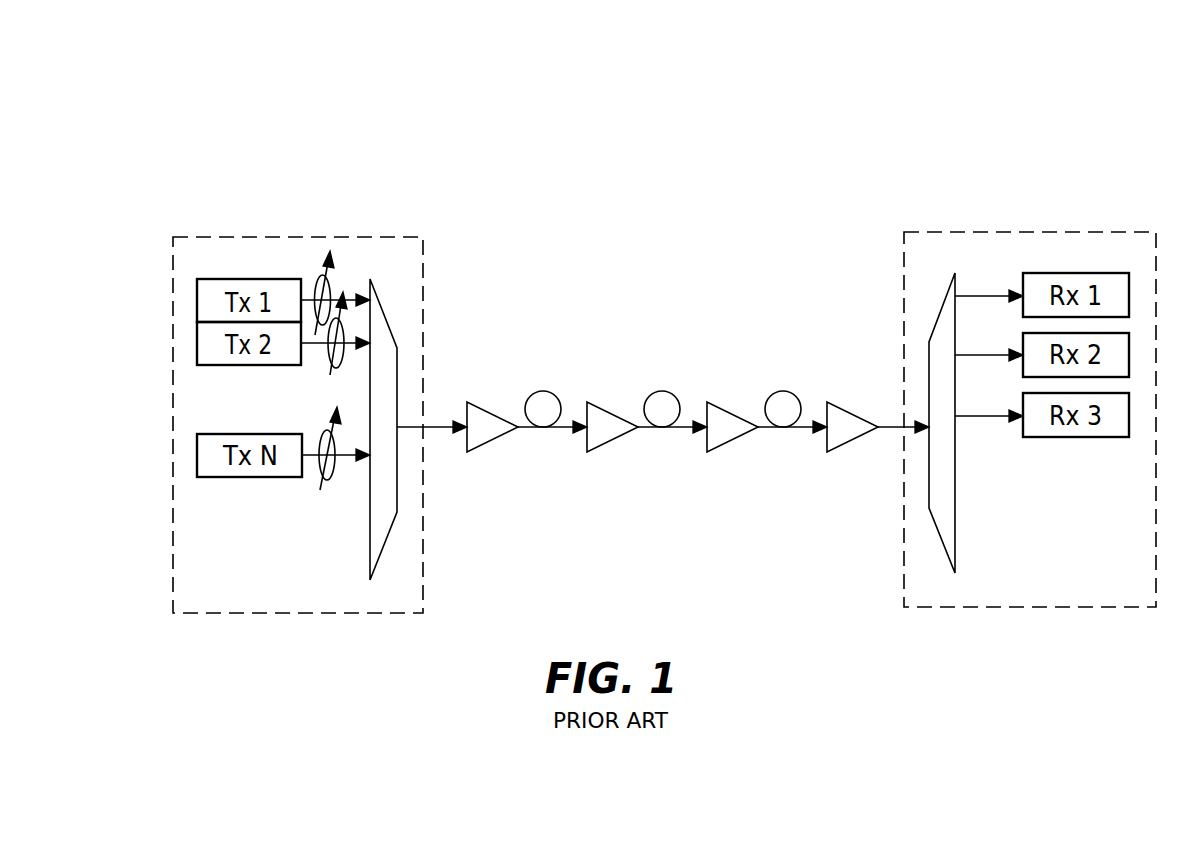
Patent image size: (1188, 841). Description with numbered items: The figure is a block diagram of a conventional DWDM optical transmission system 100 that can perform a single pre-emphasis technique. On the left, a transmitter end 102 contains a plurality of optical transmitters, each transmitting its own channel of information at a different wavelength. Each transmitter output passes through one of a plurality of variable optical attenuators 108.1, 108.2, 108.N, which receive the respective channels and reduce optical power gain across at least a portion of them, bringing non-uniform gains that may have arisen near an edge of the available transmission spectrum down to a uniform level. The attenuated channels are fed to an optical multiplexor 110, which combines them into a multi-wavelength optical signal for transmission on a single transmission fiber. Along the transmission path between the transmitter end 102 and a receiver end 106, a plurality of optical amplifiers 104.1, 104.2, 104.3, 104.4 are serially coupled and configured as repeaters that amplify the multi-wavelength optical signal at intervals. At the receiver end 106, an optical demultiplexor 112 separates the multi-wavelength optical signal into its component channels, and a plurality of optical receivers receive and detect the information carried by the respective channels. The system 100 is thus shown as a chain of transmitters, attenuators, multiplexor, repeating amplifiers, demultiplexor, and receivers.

The DWDM optical transmission system 100 is at (70, 145).
The transmitter end 102 is at (337, 617).
The optical amplifier 104.1 is at (488, 412).
The optical amplifier 104.2 is at (612, 443).
The optical amplifier 104.3 is at (732, 412).
The optical amplifier 104.4 is at (850, 443).
The receiver end 106 is at (990, 610).
The variable optical attenuator 108.1 is at (315, 275).
The variable optical attenuator 108.2 is at (328, 363).
The variable optical attenuator 108.N is at (322, 472).
The optical multiplexor 110 is at (370, 540).
The optical demultiplexor 112 is at (958, 537).